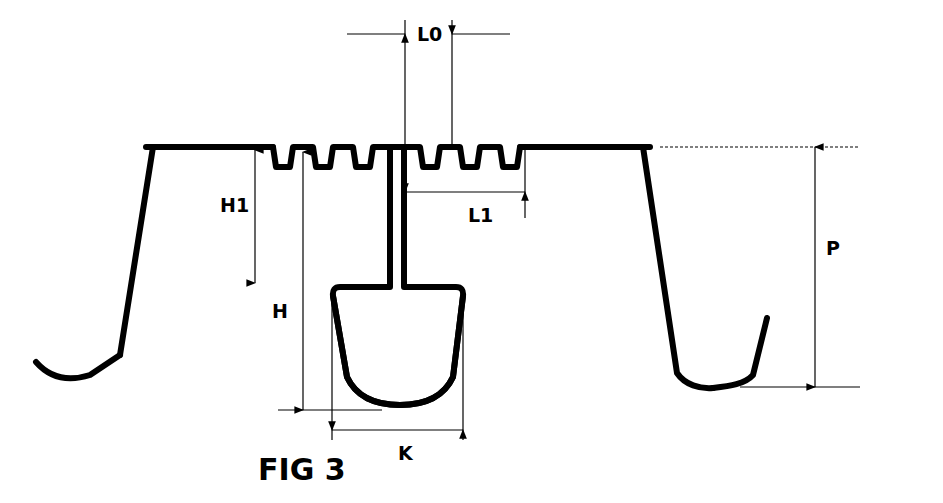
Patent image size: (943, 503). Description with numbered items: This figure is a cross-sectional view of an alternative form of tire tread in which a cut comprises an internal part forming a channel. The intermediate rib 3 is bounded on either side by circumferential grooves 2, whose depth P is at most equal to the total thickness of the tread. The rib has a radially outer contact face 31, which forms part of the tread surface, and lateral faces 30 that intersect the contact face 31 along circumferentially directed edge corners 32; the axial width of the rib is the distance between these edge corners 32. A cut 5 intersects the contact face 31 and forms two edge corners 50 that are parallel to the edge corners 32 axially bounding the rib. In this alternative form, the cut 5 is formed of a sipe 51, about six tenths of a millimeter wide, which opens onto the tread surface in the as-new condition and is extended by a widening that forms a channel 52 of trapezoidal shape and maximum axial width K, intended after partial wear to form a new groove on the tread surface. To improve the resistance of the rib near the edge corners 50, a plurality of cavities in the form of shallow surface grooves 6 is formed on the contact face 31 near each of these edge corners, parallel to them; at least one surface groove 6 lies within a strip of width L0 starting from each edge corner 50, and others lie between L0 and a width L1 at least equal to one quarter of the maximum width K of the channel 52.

The circumferential groove 2 is at (83, 203).
The intermediate rib 3 is at (232, 258).
The cut 5 is at (404, 247).
The surface groove 6 is at (367, 153).
The lateral face 30 is at (652, 197).
The contact face 31 is at (550, 143).
The edge corner 32 is at (153, 142).
The edge corner 50 is at (400, 150).
The sipe 51 is at (407, 207).
The channel 52 is at (438, 352).